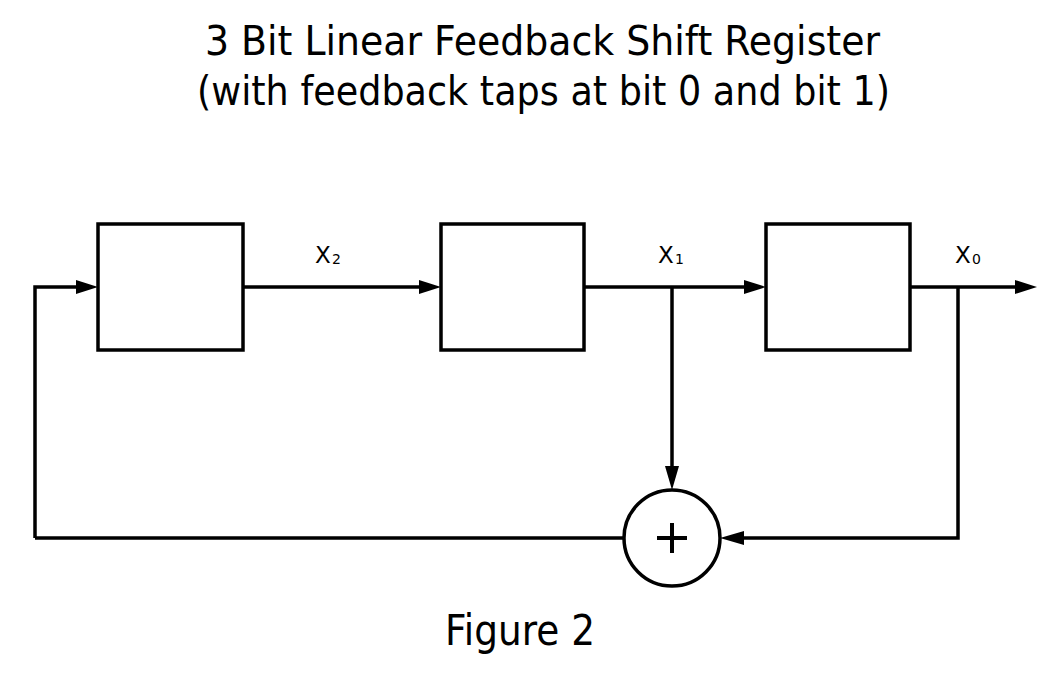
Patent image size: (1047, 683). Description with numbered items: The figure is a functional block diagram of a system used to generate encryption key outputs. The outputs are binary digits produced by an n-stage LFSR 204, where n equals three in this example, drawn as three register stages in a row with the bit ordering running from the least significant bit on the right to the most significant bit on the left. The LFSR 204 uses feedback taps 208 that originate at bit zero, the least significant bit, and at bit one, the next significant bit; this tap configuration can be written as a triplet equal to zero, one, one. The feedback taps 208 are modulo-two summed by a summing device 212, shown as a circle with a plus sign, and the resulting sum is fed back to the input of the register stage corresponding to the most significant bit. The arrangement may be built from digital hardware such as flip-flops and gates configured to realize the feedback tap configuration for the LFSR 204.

The LFSR 204 is at (827, 224).
The feedback taps 208 is at (674, 368).
The summing device 212 is at (675, 587).